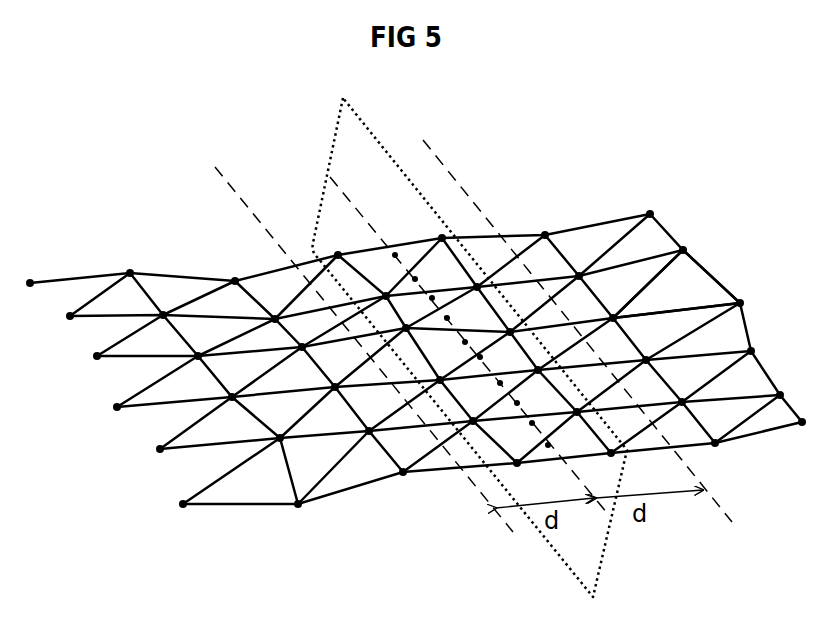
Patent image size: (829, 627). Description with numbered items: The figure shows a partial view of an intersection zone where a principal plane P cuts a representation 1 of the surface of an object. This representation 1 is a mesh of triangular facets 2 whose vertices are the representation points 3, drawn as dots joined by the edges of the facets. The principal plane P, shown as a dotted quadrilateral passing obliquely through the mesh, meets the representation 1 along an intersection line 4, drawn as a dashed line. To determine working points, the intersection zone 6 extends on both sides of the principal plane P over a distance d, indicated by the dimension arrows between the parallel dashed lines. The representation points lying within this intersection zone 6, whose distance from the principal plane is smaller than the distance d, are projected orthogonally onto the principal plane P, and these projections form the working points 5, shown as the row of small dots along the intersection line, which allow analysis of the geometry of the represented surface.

The representation of the surface of an object 1 is at (82, 243).
The triangular facet 2 is at (702, 290).
The representation point 3 is at (235, 279).
The intersection line 4 is at (328, 172).
The working point 5 is at (418, 279).
The intersection zone 6 is at (693, 527).
The principal plane P is at (333, 132).